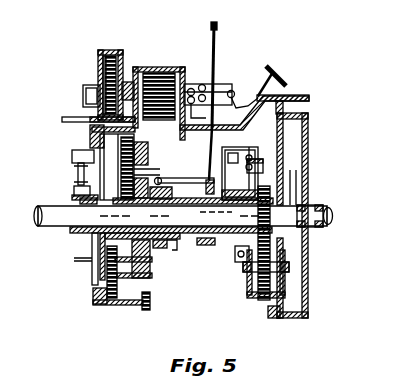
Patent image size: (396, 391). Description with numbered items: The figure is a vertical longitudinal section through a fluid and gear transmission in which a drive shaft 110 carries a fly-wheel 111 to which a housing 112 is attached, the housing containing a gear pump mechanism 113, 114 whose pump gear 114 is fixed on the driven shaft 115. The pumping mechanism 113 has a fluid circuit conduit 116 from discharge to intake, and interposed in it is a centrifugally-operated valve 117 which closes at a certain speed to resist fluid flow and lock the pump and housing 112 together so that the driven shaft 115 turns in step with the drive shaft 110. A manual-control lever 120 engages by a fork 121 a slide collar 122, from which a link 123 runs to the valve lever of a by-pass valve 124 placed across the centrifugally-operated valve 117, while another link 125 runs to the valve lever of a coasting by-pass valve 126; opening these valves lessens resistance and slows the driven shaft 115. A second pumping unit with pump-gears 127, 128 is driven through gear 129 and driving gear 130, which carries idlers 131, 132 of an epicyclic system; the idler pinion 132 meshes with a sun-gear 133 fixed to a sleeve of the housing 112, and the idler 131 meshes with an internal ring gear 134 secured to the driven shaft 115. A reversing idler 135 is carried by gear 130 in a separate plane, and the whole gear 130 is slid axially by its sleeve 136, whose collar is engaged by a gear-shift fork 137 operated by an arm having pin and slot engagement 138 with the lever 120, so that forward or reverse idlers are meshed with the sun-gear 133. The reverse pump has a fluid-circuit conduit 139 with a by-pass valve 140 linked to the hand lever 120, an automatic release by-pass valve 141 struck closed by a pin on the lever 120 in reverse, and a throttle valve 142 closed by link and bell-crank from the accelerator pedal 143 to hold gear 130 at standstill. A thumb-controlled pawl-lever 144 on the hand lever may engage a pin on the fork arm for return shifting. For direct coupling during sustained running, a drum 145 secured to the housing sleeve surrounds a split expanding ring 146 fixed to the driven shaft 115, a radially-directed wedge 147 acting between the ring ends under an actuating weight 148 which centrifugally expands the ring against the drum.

The drive shaft 110 is at (313, 206).
The fly-wheel 111 is at (308, 160).
The housing 112 is at (250, 294).
The gear pump mechanism 113 is at (267, 296).
The pump gear 114 is at (283, 192).
The driven shaft 115 is at (180, 216).
The fluid circuit conduit 116 is at (251, 148).
The centrifugally-operated valve 117 is at (228, 160).
The manual-control lever 120 is at (209, 137).
The fork 121 is at (190, 179).
The slide collar 122 is at (192, 241).
The link 123 is at (216, 216).
The by-pass valve 124 is at (247, 171).
The link 125 is at (208, 244).
The coasting by-pass valve 126 is at (240, 263).
The pump-gear 127 is at (97, 61).
The pump-gear 128 is at (83, 93).
The gear 129 is at (141, 64).
The driving gear 130 is at (149, 142).
The idler 131 is at (100, 147).
The idler pinion 132 is at (119, 168).
The sun-gear 133 is at (98, 242).
The internal ring gear 134 is at (112, 306).
The reversing idler 135 is at (93, 300).
The sleeve 136 is at (177, 251).
The gear-shift fork 137 is at (157, 178).
The pin and slot engagement 138 is at (206, 183).
The fluid-circuit conduit 139 is at (186, 74).
The by-pass valve 140 is at (189, 88).
The by-pass valve 141 is at (202, 84).
The throttle valve 142 is at (235, 90).
The accelerator pedal 143 is at (284, 69).
The pawl-lever 144 is at (212, 30).
The drum 145 is at (90, 131).
The split expanding ring 146 is at (72, 156).
The wedge 147 is at (78, 173).
The actuating weight 148 is at (74, 193).